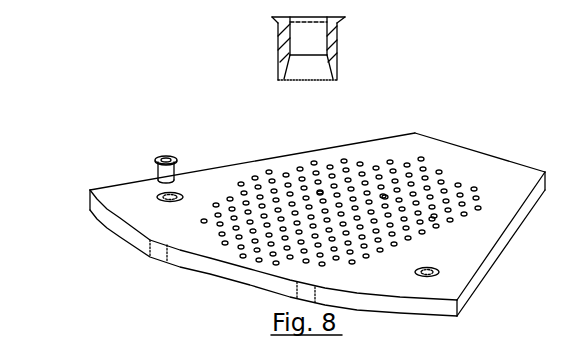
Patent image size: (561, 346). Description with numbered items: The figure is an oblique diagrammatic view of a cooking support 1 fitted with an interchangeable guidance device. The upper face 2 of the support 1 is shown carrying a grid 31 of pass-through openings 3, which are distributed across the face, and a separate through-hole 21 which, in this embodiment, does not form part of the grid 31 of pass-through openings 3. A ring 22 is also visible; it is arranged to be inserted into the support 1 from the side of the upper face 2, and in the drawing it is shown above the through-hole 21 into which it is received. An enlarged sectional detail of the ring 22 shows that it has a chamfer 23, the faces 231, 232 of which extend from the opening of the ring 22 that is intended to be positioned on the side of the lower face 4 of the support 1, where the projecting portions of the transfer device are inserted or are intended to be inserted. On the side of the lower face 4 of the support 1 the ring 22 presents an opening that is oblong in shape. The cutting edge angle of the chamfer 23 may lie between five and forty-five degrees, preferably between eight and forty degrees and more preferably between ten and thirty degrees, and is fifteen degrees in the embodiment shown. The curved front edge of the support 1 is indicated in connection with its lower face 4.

The support 1 is at (212, 267).
The upper face 2 is at (120, 193).
The pass-through openings 3 is at (432, 217).
The grid 31 is at (376, 206).
The lower face 4 is at (148, 255).
The through-hole 21 is at (173, 193).
The ring 22 is at (263, 50).
The chamfer 23 is at (308, 63).
The face of the chamfer 231 is at (333, 63).
The face of the chamfer 232 is at (283, 67).